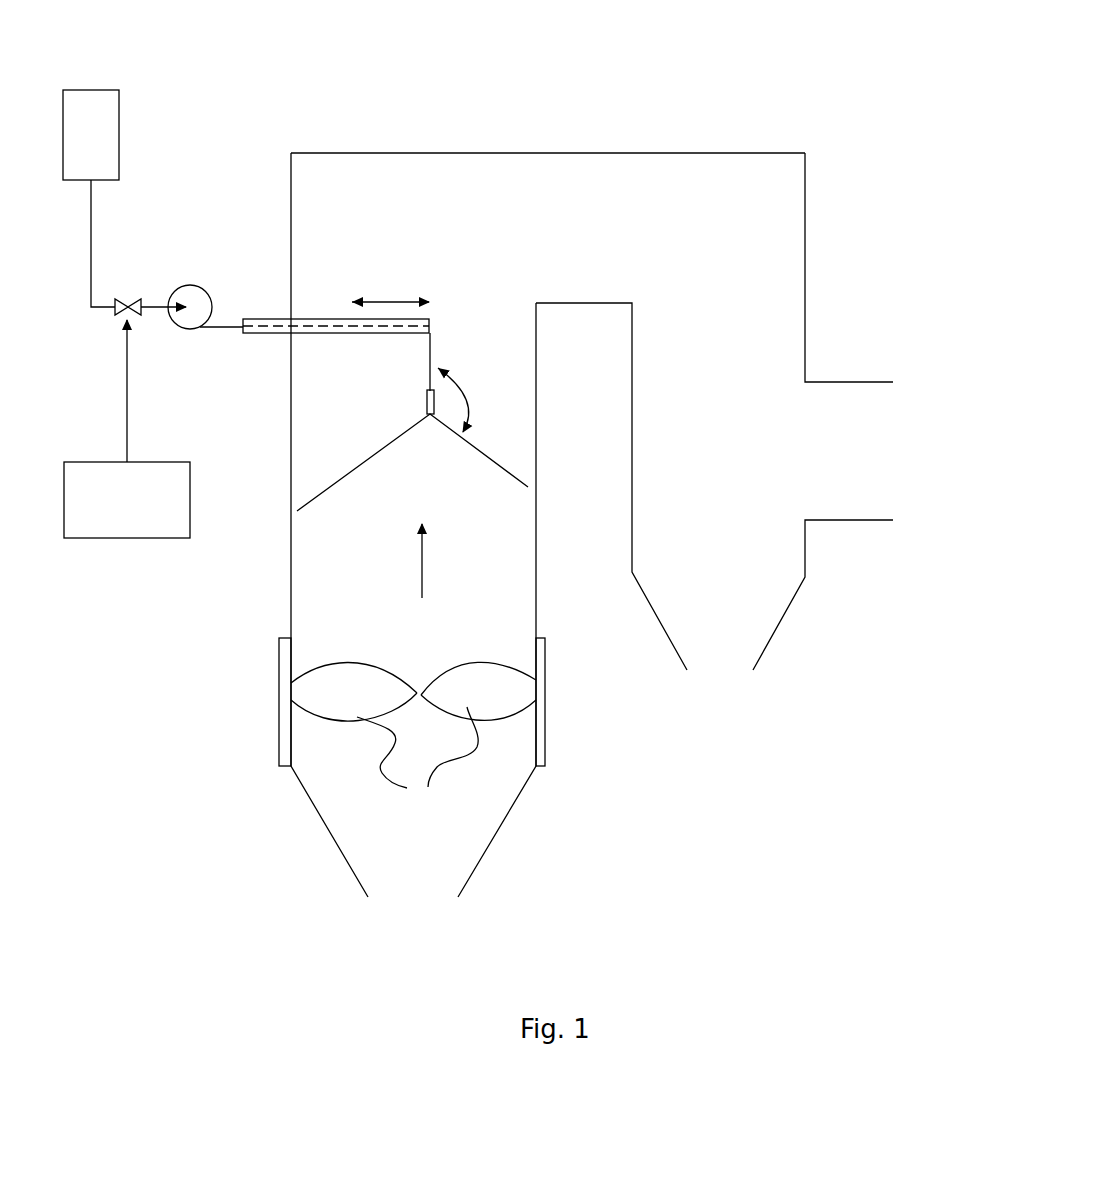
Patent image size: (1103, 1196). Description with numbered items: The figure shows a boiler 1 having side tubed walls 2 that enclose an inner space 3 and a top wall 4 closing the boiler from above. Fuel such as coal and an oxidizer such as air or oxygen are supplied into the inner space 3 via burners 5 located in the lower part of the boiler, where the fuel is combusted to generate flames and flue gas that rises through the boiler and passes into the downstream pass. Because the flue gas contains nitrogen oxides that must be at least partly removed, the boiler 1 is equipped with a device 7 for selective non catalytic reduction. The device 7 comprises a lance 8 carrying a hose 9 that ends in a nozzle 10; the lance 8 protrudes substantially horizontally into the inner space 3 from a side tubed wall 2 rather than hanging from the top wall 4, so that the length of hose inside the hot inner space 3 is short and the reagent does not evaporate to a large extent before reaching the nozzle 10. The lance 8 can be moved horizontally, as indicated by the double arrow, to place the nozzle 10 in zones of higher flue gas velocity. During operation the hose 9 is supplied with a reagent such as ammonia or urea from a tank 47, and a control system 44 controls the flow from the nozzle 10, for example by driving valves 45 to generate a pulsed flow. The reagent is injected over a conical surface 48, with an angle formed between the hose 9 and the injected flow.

The boiler 1 is at (668, 84).
The side tubed walls 2 is at (290, 566).
The inner space 3 is at (430, 391).
The top wall 4 is at (501, 152).
The burners 5 is at (283, 737).
The device for selective non catalytic reduction 7 is at (224, 237).
The lance 8 is at (309, 317).
The hose 9 is at (431, 349).
The nozzle 10 is at (427, 402).
The control system 44 is at (127, 429).
The valves 45 is at (118, 312).
The tank 47 is at (91, 198).
The conical surface 48 is at (337, 479).